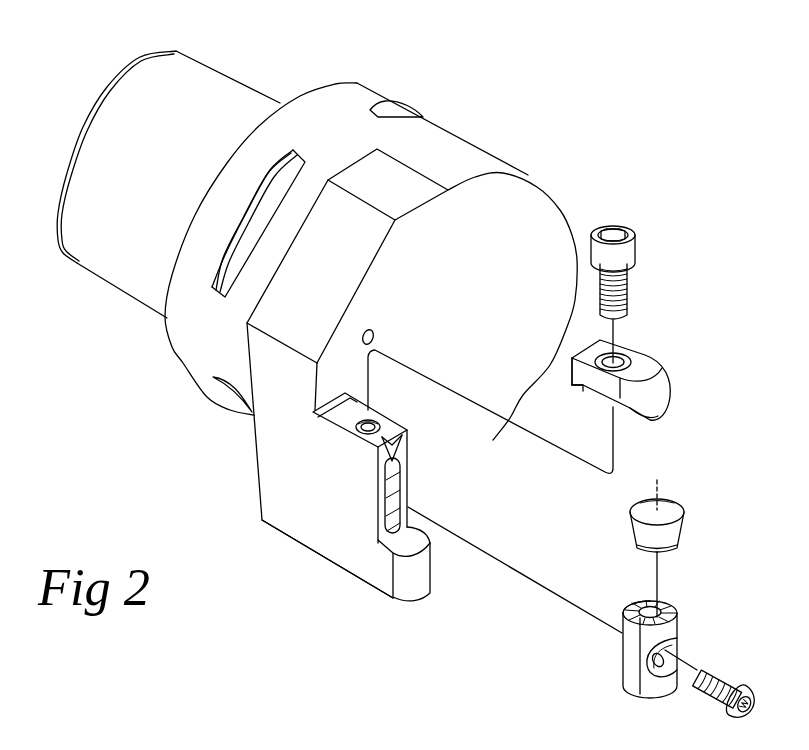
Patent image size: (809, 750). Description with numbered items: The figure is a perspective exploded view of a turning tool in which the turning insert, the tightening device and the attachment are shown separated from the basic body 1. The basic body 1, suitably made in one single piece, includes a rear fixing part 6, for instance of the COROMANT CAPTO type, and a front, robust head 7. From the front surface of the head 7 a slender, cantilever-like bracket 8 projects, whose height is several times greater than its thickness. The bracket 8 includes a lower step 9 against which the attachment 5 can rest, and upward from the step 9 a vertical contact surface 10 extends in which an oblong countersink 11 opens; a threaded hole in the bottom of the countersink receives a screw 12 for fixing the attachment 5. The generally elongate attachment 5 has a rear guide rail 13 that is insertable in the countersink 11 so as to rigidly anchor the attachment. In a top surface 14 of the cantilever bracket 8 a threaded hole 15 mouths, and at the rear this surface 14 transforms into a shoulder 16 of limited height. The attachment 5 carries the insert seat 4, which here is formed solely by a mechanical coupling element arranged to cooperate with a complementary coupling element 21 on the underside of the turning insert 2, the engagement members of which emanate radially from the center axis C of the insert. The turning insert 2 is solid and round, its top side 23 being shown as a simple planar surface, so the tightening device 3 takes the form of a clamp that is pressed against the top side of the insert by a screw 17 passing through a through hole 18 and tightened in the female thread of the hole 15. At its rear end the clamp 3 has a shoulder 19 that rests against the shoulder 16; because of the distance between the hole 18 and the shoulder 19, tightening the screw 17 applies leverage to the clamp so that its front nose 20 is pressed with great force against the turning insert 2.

The basic body 1 is at (493, 114).
The turning insert 2 is at (708, 516).
The tightening device 3 is at (688, 376).
The insert seat 4 is at (673, 607).
The attachment 5 is at (627, 665).
The rear fixing part 6 is at (113, 275).
The head 7 is at (203, 387).
The bracket 8 is at (345, 560).
The lower step 9 is at (427, 575).
The vertical contact surface 10 is at (407, 473).
The oblong countersink 11 is at (390, 485).
The screw 12 is at (730, 680).
The rear guide rail 13 is at (637, 598).
The top surface 14 is at (393, 428).
The threaded hole 15 is at (357, 423).
The shoulder 16 is at (335, 402).
The screw 17 is at (635, 257).
The through hole 18 is at (620, 365).
The shoulder 19 is at (582, 387).
The front nose 20 is at (637, 417).
The coupling element 21 is at (670, 550).
The top side 23 is at (668, 505).
The center axis C is at (653, 572).